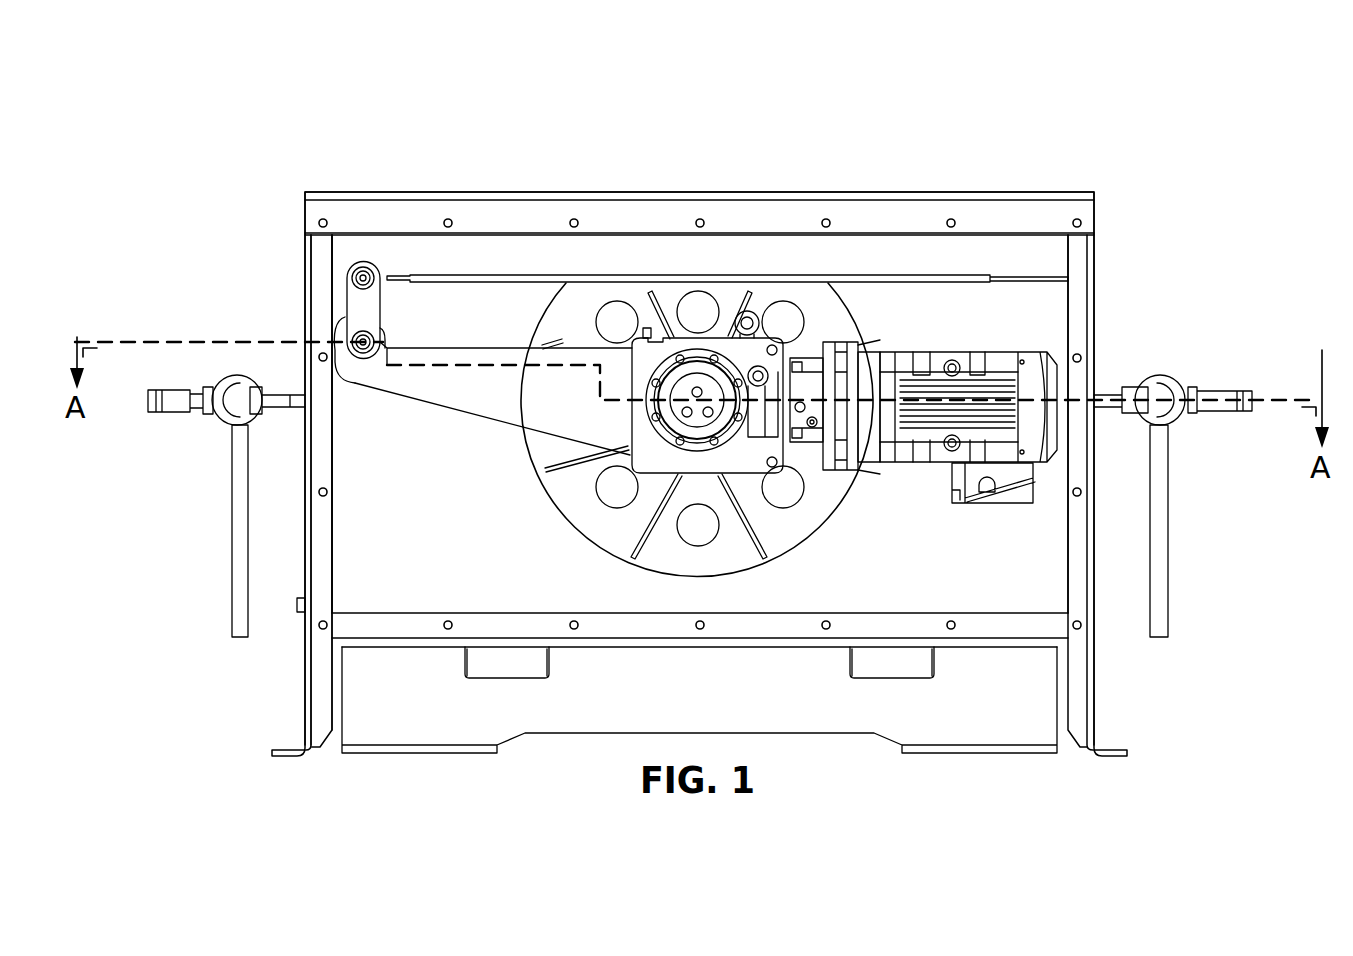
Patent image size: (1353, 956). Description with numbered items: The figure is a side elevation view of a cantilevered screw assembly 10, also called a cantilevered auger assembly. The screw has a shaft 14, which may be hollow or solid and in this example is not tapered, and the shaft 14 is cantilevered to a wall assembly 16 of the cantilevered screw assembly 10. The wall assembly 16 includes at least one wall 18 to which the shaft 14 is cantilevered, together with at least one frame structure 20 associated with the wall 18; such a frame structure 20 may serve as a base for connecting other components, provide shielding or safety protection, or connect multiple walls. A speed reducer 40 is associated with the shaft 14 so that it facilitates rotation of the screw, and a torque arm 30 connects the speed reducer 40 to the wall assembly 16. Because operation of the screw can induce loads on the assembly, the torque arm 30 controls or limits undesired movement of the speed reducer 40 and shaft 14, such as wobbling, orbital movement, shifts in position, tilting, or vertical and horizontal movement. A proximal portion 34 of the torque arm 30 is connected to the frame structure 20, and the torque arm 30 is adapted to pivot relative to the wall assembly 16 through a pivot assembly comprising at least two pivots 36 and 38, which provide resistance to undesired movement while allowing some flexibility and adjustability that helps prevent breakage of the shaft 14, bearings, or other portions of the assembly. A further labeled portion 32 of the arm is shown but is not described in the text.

The cantilevered screw assembly 10 is at (425, 145).
The shaft 14 is at (697, 425).
The wall assembly 16 is at (375, 518).
The wall 18 is at (355, 568).
The frame structure 20 is at (353, 250).
The torque arm 30 is at (513, 350).
The arm lower portion 32 is at (620, 473).
The proximal portion 34 is at (383, 332).
The pivot 36 is at (350, 282).
The pivot 38 is at (345, 318).
The speed reducer 40 is at (632, 410).